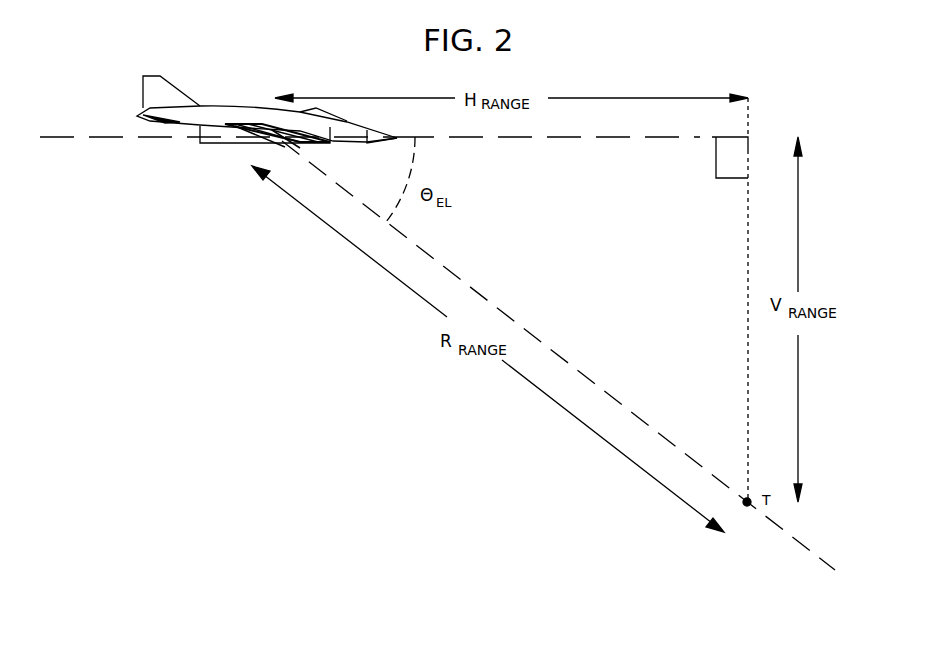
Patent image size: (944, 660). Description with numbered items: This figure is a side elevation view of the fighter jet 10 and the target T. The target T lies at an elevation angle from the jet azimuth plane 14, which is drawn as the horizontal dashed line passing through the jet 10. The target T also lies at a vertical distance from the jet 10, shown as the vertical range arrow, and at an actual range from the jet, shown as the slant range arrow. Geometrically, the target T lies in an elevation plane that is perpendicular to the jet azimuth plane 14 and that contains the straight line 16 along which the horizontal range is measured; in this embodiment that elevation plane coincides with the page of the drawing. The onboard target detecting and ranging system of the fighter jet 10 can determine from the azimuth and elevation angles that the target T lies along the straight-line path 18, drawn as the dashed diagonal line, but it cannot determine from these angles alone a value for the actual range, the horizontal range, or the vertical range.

The fighter jet 10 is at (206, 107).
The jet azimuth plane 14 is at (112, 140).
The straight line 16 is at (576, 140).
The straight-line path 18 is at (565, 362).